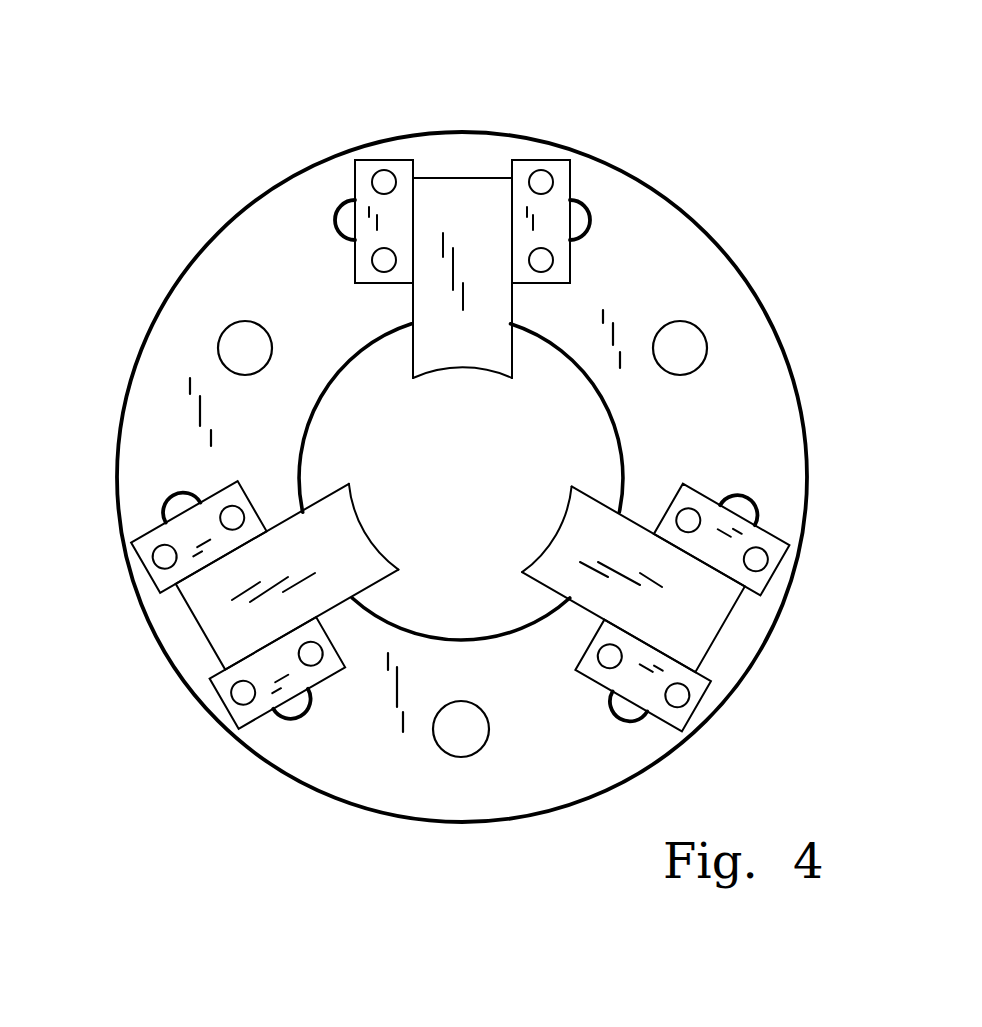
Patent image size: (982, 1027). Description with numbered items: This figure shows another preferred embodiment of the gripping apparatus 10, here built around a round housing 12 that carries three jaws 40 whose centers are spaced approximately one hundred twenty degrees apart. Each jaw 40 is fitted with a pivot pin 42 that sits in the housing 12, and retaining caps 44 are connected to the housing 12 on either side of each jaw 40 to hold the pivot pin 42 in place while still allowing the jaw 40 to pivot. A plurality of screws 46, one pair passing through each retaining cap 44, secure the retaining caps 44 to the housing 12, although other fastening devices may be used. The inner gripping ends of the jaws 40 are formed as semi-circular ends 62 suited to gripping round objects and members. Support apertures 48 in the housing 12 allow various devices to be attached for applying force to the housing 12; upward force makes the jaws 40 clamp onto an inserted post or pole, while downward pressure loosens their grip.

The gripping apparatus 10 is at (508, 103).
The housing 12 is at (413, 822).
The jaw 40 is at (513, 355).
The pivot pin 42 is at (333, 220).
The retaining cap 44 is at (418, 160).
The screw 46 is at (389, 171).
The support aperture 48 is at (243, 321).
The semi-circular end 62 is at (460, 369).